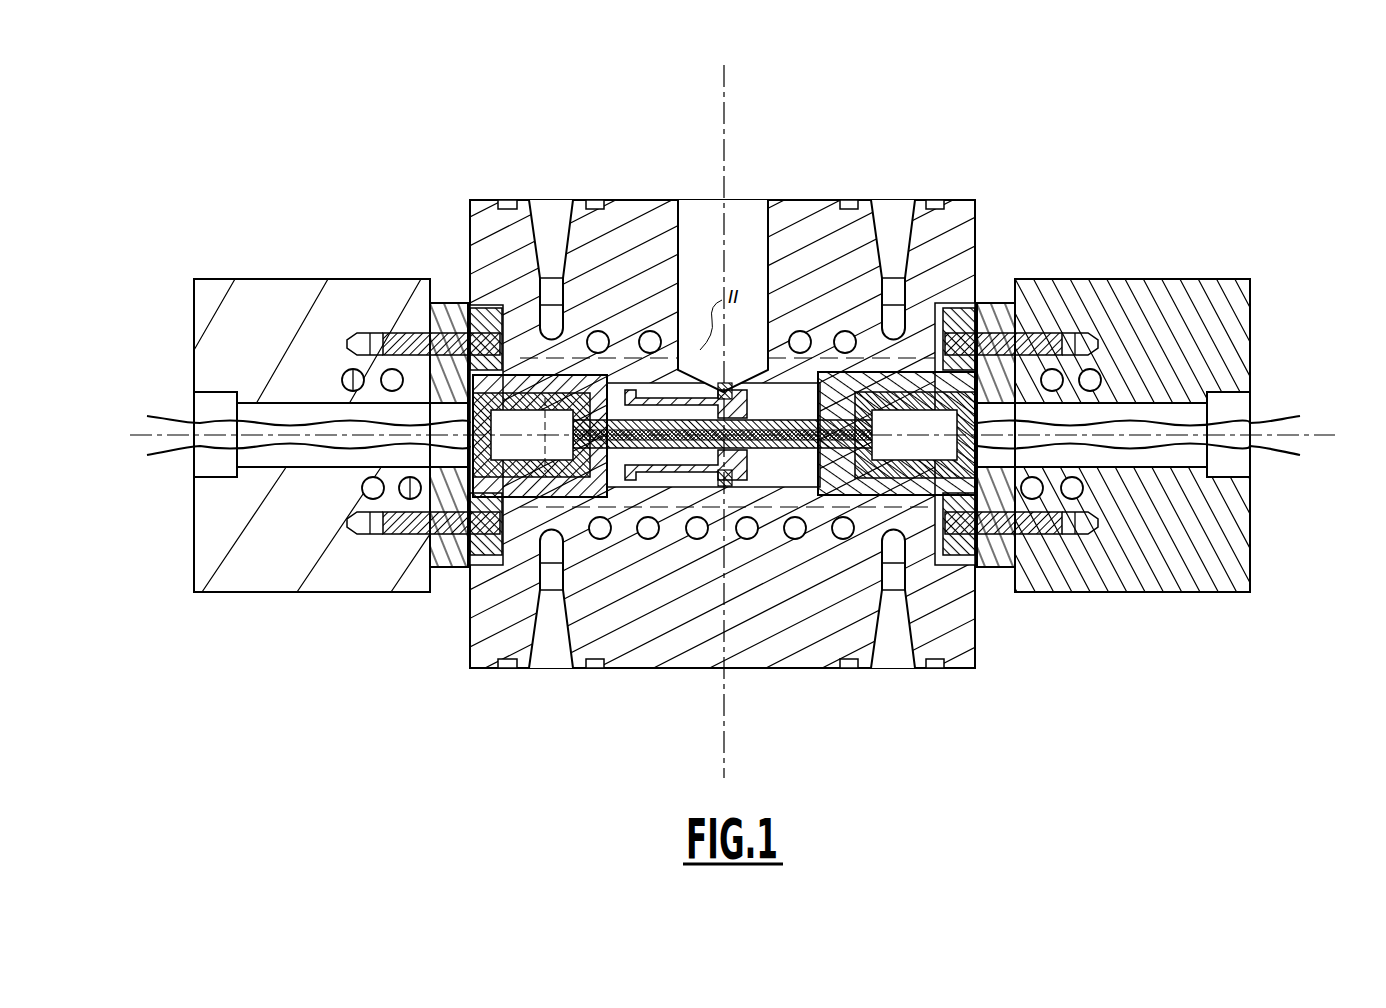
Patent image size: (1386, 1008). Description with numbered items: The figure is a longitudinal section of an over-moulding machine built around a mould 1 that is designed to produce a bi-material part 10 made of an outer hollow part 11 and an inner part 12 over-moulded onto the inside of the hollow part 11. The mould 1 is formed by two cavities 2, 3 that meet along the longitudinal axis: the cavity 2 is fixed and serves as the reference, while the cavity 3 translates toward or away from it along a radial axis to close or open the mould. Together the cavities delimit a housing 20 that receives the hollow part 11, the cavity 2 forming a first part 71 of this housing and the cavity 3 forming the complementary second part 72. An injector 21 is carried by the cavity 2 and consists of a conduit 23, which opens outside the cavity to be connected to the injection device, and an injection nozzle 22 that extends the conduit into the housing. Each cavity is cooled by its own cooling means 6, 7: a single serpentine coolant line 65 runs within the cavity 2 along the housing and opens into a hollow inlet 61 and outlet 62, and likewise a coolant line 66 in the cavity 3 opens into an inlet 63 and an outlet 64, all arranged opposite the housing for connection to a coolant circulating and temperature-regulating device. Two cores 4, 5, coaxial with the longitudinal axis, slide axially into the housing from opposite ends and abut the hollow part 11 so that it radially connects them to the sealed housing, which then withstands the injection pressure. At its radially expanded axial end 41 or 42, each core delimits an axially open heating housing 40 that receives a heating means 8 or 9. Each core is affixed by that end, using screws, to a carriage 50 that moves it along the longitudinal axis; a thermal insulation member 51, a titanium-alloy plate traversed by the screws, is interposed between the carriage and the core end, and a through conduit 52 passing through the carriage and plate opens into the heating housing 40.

The mould 1 is at (830, 178).
The cavity 2 is at (976, 205).
The cavity 3 is at (785, 670).
The core 4 is at (522, 368).
The core 5 is at (1008, 320).
The cooling means 6 is at (651, 336).
The cooling means 7 is at (840, 542).
The heating means 8 is at (433, 569).
The heating means 9 is at (988, 572).
The bi-material part 10 is at (692, 731).
The hollow part 11 is at (652, 478).
The inner part 12 is at (706, 486).
The housing 20 is at (620, 392).
The injector 21 is at (745, 245).
The injection nozzle 22 is at (733, 378).
The conduit 23 is at (707, 225).
The heating housing 40 is at (470, 452).
The axial end 41 is at (521, 450).
The axial end 42 is at (917, 445).
The carriage 50 is at (287, 279).
The thermal insulation member 51 is at (447, 303).
The through conduit 52 is at (305, 458).
The inlet 61 is at (552, 210).
The outlet 62 is at (893, 232).
The inlet 63 is at (551, 640).
The outlet 64 is at (893, 640).
The coolant line 65 is at (598, 330).
The coolant line 66 is at (600, 540).
The first part of the housing 71 is at (880, 388).
The second part of the housing 72 is at (738, 488).